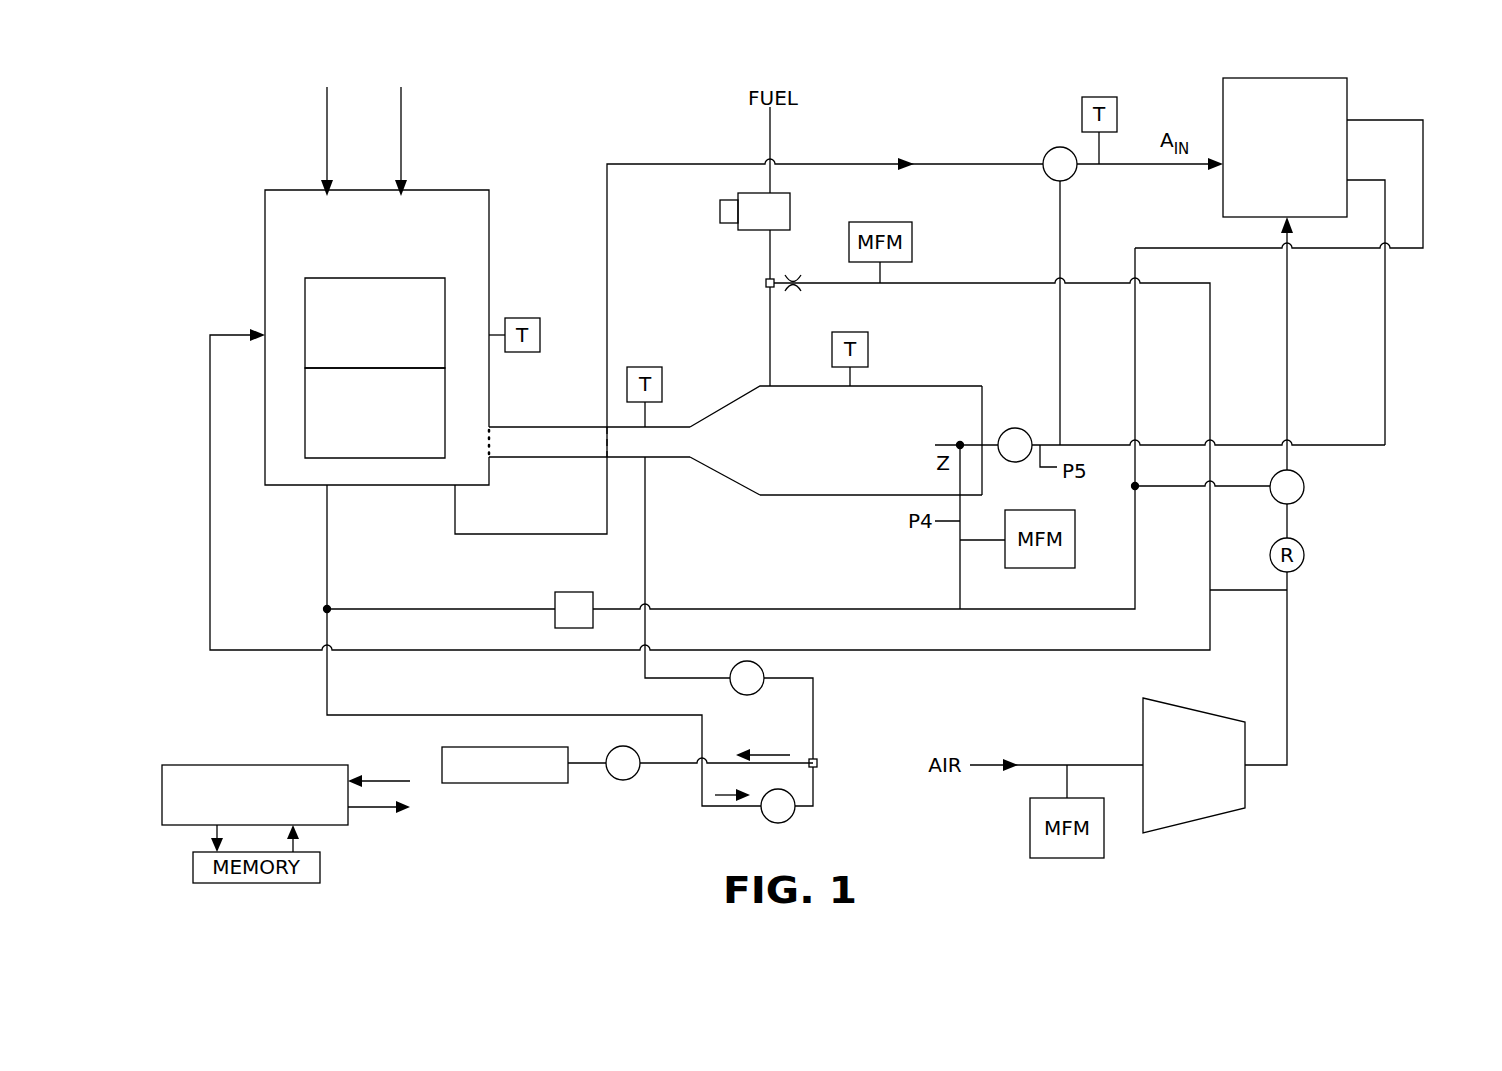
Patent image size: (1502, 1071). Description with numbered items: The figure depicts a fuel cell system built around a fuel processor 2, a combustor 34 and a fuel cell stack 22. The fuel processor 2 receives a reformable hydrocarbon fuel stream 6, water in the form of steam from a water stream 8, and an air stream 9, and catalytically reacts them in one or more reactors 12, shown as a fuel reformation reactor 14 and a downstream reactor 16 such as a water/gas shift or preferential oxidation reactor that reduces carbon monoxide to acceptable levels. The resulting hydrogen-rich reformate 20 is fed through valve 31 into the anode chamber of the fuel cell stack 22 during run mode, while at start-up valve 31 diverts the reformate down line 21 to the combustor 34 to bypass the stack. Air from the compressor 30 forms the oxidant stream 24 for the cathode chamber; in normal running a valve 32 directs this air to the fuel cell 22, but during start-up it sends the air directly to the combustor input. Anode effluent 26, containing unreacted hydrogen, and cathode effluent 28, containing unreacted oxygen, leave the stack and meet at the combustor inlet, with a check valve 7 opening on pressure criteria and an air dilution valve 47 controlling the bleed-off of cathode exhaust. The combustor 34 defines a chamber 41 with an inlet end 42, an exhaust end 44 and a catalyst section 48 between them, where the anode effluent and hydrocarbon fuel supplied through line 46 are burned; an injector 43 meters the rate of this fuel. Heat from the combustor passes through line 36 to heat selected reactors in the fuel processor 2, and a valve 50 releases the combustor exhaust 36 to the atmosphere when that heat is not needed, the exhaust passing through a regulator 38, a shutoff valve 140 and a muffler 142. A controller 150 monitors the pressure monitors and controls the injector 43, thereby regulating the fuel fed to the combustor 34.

The fuel processor 2 is at (246, 287).
The hydrocarbon fuel stream 6 is at (327, 127).
The check valve 7 is at (1015, 428).
The water stream 8 is at (401, 127).
The air stream 9 is at (210, 545).
The reactors 12 is at (439, 358).
The fuel reformation reactor 14 is at (445, 296).
The downstream reactor 16 is at (445, 410).
The hydrogen-rich reformate stream 20 is at (490, 536).
The bypass line 21 is at (1060, 218).
The fuel cell stack 22 is at (1274, 189).
The oxidant stream 24 is at (1288, 318).
The anode effluent 26 is at (1386, 218).
The cathode effluent 28 is at (1424, 150).
The compressor 30 is at (1143, 742).
The valve 31 is at (1053, 149).
The valve 32 is at (1304, 487).
The combustor 34 is at (835, 437).
The combustor exhaust line 36 is at (522, 452).
The regulator 38 is at (784, 822).
The chamber 41 is at (778, 485).
The inlet end 42 is at (982, 407).
The injector 43 is at (792, 203).
The exhaust end 44 is at (730, 464).
The hydrocarbon fuel line 46 is at (770, 348).
The air dilution valve 47 is at (578, 592).
The catalyst section 48 is at (860, 485).
The valve 50 is at (757, 690).
The shutoff valve 140 is at (633, 775).
The muffler 142 is at (503, 778).
The controller 150 is at (243, 752).